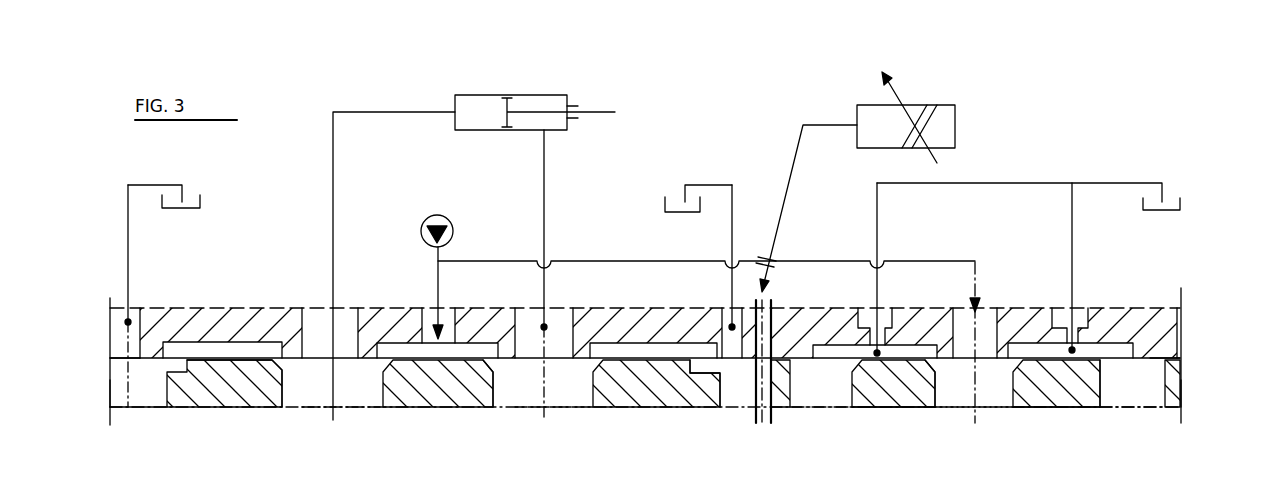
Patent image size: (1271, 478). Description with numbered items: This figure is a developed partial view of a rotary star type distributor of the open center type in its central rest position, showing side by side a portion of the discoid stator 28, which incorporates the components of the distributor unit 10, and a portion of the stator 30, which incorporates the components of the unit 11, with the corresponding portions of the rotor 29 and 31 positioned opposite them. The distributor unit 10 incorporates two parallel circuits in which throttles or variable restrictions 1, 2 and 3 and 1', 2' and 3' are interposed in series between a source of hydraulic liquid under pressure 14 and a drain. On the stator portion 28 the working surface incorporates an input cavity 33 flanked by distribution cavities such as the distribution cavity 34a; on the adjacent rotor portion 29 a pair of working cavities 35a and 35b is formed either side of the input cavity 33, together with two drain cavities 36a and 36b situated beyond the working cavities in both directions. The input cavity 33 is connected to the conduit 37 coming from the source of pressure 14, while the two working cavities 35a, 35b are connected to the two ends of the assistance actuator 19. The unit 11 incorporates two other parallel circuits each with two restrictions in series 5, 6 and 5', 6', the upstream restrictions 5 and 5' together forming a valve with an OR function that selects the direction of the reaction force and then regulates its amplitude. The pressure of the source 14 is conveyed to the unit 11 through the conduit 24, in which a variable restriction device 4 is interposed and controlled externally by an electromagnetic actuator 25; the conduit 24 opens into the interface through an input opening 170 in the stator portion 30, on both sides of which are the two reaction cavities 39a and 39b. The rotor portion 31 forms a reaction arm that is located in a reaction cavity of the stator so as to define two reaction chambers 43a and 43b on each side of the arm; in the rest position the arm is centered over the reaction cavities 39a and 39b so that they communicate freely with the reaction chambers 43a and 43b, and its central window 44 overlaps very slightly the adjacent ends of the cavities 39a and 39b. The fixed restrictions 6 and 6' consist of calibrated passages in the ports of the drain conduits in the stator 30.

The variable restriction 1 is at (438, 400).
The variable restriction 1' is at (483, 400).
The variable restriction 2 is at (247, 400).
The variable restriction 2' is at (656, 400).
The variable restriction 3 is at (224, 400).
The variable restriction 3' is at (696, 400).
The variable restriction device 4 is at (806, 208).
The upstream variable restriction 5 is at (940, 401).
The upstream variable restriction 5' is at (1050, 401).
The fixed restriction 6 is at (893, 401).
The fixed restriction 6' is at (1099, 401).
The distributor unit 10 is at (218, 310).
The unit 11 is at (1147, 300).
The source of hydraulic liquid under pressure 14 is at (437, 261).
The assistance actuator 19 is at (535, 98).
The conduit 24 is at (658, 260).
The electromagnetic actuator 25 is at (906, 117).
The stator portion 28 is at (102, 317).
The rotor portion 29 is at (102, 388).
The stator portion 30 is at (1190, 316).
The rotor portion 31 is at (1190, 390).
The input cavity 33 is at (400, 348).
The distribution cavity 34a is at (244, 350).
The working cavity 35a is at (342, 396).
The working cavity 35b is at (550, 396).
The drain cavity 36a is at (145, 402).
The drain cavity 36b is at (736, 402).
The conduit 37 is at (448, 322).
The reaction cavity 39a is at (910, 350).
The reaction cavity 39b is at (1092, 345).
The reaction chamber 43a is at (800, 395).
The reaction chamber 43b is at (1110, 395).
The central window 44 is at (940, 394).
The input opening 170 is at (975, 278).